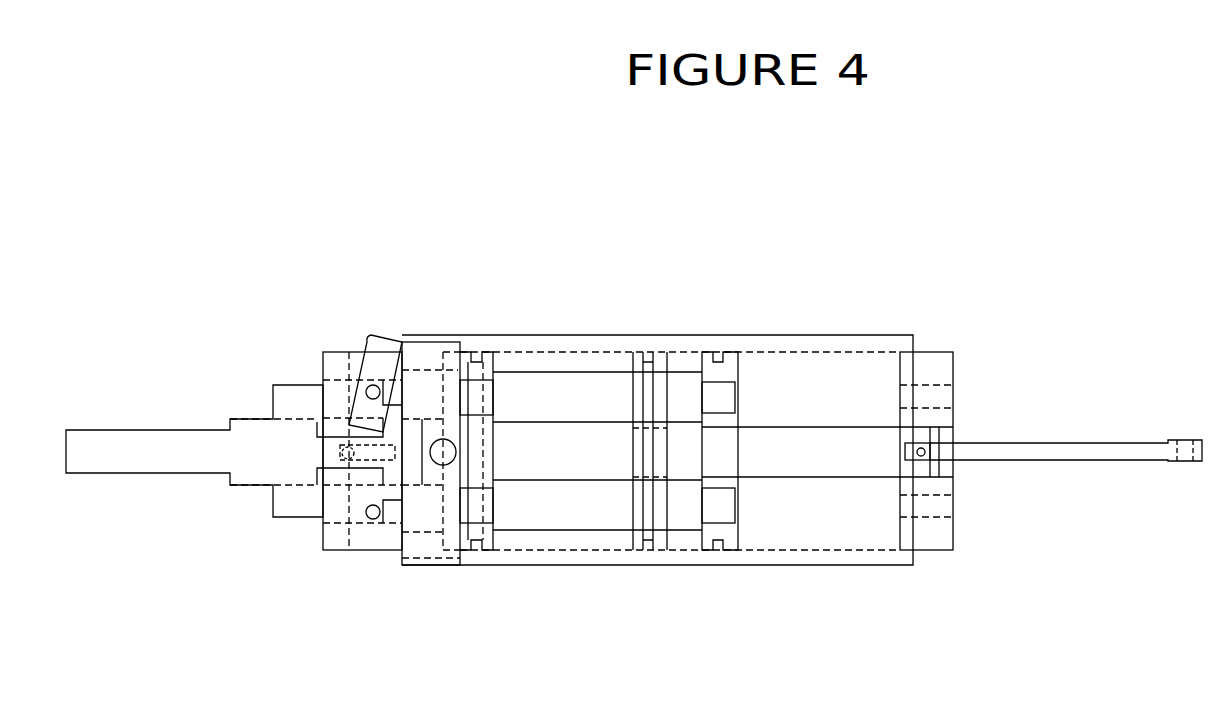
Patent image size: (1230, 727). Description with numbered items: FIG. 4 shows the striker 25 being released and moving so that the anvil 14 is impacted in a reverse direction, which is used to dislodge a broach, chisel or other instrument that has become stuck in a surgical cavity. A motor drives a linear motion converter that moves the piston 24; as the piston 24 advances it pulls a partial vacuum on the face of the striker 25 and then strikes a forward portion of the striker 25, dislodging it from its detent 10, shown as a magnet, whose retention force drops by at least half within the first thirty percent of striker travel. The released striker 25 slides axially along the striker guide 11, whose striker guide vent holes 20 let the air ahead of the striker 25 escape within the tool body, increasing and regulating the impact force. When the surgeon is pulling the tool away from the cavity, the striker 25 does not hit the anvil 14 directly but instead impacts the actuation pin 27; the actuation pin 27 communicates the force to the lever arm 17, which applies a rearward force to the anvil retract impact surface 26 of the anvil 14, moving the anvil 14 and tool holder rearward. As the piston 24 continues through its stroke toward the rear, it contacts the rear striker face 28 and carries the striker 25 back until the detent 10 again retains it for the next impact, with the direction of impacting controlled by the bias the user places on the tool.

The detent 10 is at (940, 370).
The striker guide 11 is at (600, 345).
The anvil 14 is at (161, 450).
The lever arm 17 is at (377, 337).
The striker guide vent holes 20 is at (447, 448).
The piston 24 is at (643, 447).
The striker 25 is at (727, 370).
The anvil retract impact surface 26 is at (380, 478).
The actuation pin 27 is at (415, 355).
The rear striker face 28 is at (700, 538).